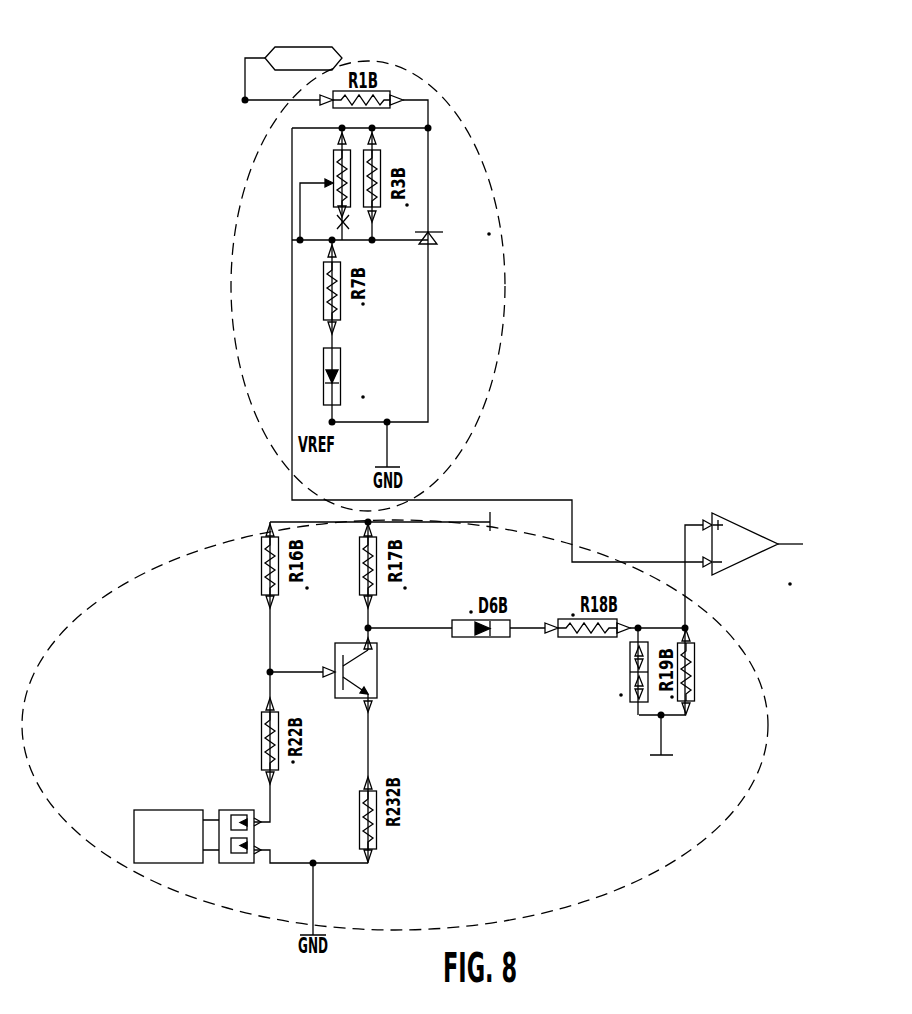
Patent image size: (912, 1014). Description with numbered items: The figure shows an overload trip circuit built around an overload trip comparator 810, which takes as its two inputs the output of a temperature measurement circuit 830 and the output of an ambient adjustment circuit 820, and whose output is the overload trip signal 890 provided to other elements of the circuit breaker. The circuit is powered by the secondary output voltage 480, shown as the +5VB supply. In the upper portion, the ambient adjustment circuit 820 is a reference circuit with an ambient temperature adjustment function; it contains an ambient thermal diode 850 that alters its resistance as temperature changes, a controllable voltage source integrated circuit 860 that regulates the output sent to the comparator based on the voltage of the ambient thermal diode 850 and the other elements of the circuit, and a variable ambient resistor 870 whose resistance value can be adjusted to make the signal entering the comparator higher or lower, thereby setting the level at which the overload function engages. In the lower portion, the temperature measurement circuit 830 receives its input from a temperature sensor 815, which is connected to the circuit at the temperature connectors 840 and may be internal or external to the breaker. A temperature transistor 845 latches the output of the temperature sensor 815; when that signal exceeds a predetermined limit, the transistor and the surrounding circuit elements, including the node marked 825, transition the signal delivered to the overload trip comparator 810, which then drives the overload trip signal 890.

The secondary output voltage 480 is at (297, 47).
The ambient adjustment circuit 820 is at (492, 190).
The variable ambient resistor 870 is at (332, 178).
The controllable voltage source integrated circuit 860 is at (428, 232).
The ambient thermal diode 850 is at (342, 356).
The overload trip comparator 810 is at (751, 520).
The overload trip signal 890 is at (803, 546).
The temperature measurement circuit 830 is at (765, 686).
The temperature transistor 845 is at (378, 672).
The filter capacitor C5B 825 is at (638, 714).
The temperature sensor 815 is at (149, 810).
The temperature connectors 840 is at (229, 810).